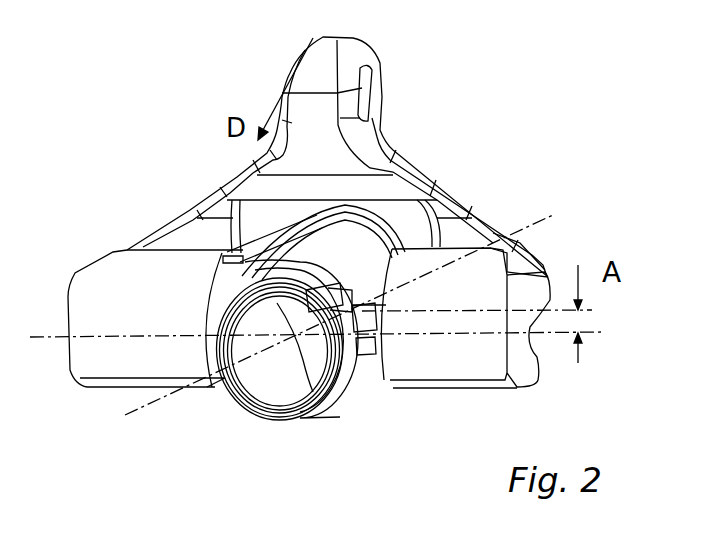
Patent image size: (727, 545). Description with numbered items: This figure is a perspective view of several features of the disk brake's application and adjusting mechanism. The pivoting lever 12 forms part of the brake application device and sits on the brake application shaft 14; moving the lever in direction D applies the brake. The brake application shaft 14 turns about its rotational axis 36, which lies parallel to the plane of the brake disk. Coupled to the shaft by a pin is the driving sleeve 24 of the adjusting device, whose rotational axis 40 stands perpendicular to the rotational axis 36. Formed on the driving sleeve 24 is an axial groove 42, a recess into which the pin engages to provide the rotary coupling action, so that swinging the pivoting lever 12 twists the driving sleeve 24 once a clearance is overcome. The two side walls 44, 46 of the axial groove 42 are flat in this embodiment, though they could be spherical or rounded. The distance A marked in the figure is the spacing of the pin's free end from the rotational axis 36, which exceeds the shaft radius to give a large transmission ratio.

The pivoting lever 12 is at (370, 48).
The brake application shaft 14 is at (487, 388).
The driving sleeve 24 is at (334, 412).
The rotational axis 36 is at (47, 338).
The rotational axis 40 is at (537, 218).
The axial groove 42 is at (322, 335).
The side wall 44 is at (367, 345).
The side wall 46 is at (325, 328).